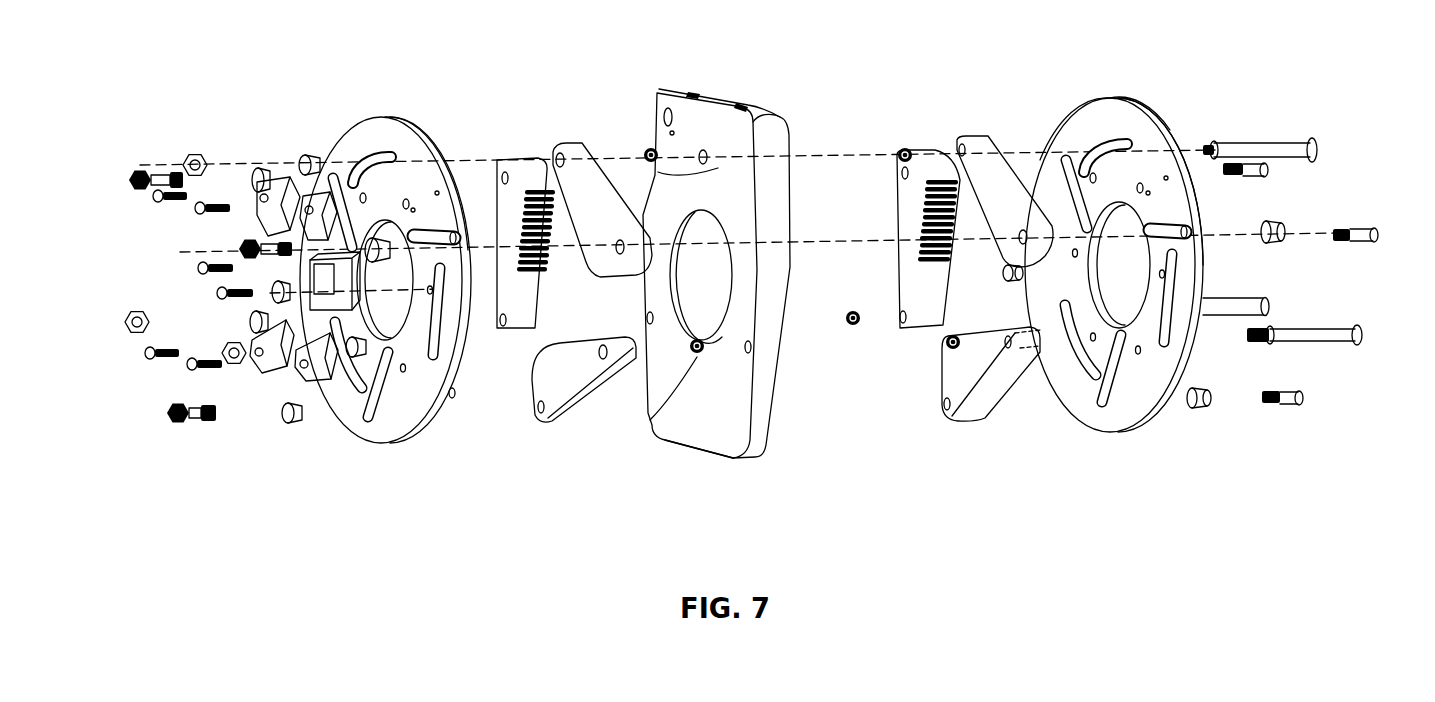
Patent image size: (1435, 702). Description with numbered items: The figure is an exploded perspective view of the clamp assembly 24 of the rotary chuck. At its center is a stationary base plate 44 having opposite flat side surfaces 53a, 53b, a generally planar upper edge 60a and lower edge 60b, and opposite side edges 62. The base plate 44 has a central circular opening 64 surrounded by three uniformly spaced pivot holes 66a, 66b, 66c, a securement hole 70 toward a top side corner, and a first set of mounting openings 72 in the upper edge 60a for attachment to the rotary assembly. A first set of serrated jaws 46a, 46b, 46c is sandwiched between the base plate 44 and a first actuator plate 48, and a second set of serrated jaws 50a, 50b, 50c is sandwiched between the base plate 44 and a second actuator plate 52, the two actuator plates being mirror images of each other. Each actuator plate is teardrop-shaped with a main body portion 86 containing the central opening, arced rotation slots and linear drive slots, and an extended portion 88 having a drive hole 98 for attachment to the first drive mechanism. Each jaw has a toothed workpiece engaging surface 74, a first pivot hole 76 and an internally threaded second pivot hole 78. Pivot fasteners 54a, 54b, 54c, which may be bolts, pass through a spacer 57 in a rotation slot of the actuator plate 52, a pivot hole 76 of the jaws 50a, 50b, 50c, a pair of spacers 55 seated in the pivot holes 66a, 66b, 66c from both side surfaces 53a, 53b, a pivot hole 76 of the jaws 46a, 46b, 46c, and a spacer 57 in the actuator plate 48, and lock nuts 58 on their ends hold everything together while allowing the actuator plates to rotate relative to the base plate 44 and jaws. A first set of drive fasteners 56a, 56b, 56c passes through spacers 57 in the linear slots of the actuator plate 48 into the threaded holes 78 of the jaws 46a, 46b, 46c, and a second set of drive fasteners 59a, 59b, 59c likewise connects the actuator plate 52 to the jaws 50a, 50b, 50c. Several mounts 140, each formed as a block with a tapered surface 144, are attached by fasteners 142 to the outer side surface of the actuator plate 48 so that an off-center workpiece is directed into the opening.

The clamp assembly 24 is at (926, 54).
The stationary base plate 44 is at (705, 455).
The serrated jaw 46a is at (503, 330).
The serrated jaw 46b is at (590, 418).
The serrated jaw 46c is at (575, 143).
The first actuator plate 48 is at (398, 120).
The serrated jaw 50a is at (920, 328).
The serrated jaw 50b is at (1005, 398).
The serrated jaw 50c is at (1000, 138).
The second actuator plate 52 is at (1137, 137).
The first side surface 53a is at (750, 391).
The second side surface 53b is at (777, 393).
The pivot fastener 54a is at (1220, 315).
The pivot fastener 54b is at (1330, 345).
The pivot fastener 54c is at (1265, 140).
The spacer 55 is at (718, 168).
The drive fastener 56a is at (172, 168).
The drive fastener 56b is at (190, 425).
The drive fastener 56c is at (240, 249).
The spacer 57 is at (262, 168).
The lock nut 58 is at (197, 153).
The drive fastener 59a is at (1245, 178).
The drive fastener 59b is at (1283, 408).
The drive fastener 59c is at (1355, 228).
The upper edge 60a is at (720, 100).
The lower edge 60b is at (677, 462).
The side edge 62 is at (645, 188).
The central circular opening 64 is at (732, 286).
The pivot hole 66a is at (645, 320).
The pivot hole 66b is at (750, 350).
The pivot hole 66c is at (708, 157).
The securement hole 70 is at (660, 92).
The mounting opening 72 is at (695, 92).
The workpiece engaging surface 74 is at (922, 240).
The first pivot hole 76 is at (962, 148).
The second pivot hole 78 is at (900, 172).
The main body portion 86 is at (1080, 378).
The extended portion 88 is at (1017, 303).
The drive hole 98 is at (220, 292).
The mount 140 is at (258, 215).
The fastener 142 is at (218, 203).
The tapered surface 144 is at (284, 290).